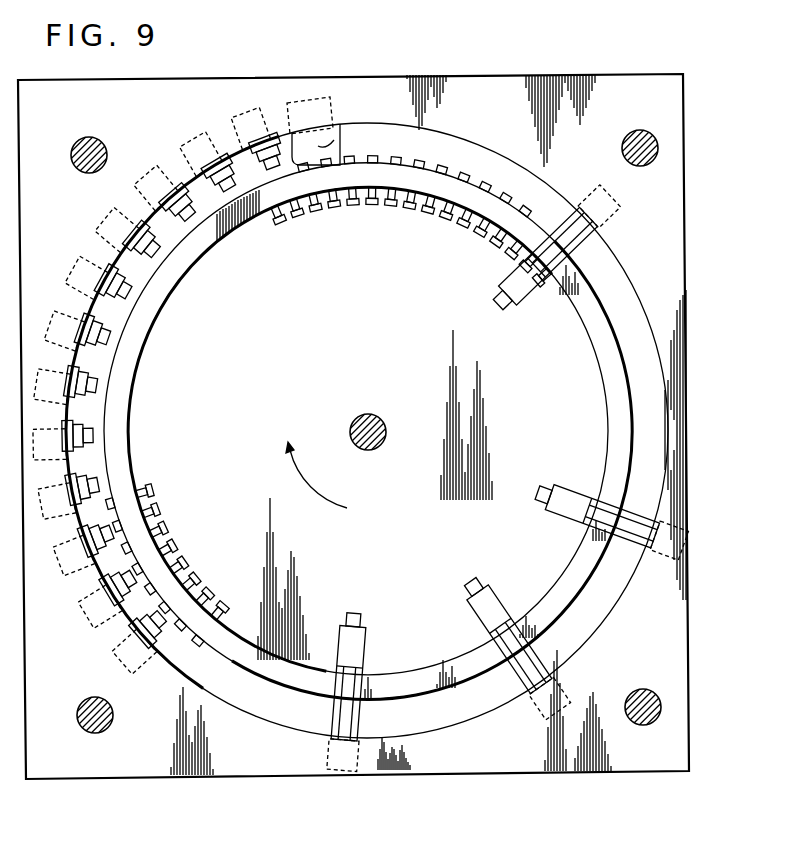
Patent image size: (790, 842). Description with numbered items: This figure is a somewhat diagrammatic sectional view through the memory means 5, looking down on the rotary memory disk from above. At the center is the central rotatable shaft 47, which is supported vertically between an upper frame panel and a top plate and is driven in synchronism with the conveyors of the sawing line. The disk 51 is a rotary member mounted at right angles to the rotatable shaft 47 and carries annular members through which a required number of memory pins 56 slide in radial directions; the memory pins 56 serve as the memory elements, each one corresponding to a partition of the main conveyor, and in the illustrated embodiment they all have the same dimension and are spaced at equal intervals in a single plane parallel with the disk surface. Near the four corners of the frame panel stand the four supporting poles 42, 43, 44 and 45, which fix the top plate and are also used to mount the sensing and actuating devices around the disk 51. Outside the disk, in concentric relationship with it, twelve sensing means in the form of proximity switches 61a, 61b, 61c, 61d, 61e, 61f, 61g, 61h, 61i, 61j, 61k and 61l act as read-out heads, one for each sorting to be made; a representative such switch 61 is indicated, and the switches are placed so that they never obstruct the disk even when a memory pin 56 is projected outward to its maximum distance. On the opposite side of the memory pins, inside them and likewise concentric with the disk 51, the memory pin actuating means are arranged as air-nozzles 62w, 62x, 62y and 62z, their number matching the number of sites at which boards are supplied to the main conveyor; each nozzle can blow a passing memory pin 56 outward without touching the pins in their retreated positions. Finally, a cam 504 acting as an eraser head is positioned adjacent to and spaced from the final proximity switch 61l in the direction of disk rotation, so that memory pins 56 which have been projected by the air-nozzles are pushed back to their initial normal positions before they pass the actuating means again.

The memory means 5 is at (281, 782).
The supporting pole 42 is at (113, 704).
The supporting pole 43 is at (628, 691).
The supporting pole 44 is at (621, 147).
The supporting pole 45 is at (103, 124).
The central rotatable shaft 47 is at (381, 419).
The disk 51 is at (217, 648).
The memory pin 56 is at (158, 508).
The proximity switch 61 is at (94, 449).
The proximity switch 61a is at (117, 638).
The proximity switch 61b is at (88, 592).
The proximity switch 61c is at (78, 530).
The proximity switch 61d is at (74, 472).
The proximity switch 61e is at (70, 416).
The proximity switch 61f is at (70, 368).
The proximity switch 61g is at (82, 318).
The proximity switch 61h is at (104, 265).
The proximity switch 61i is at (138, 216).
The proximity switch 61j is at (170, 176).
The proximity switch 61k is at (216, 146).
The proximity switch 61l is at (268, 114).
The air-nozzle 62w is at (512, 315).
The air-nozzle 62x is at (545, 489).
The air-nozzle 62y is at (480, 582).
The air-nozzle 62z is at (365, 618).
The cam 504 is at (339, 158).